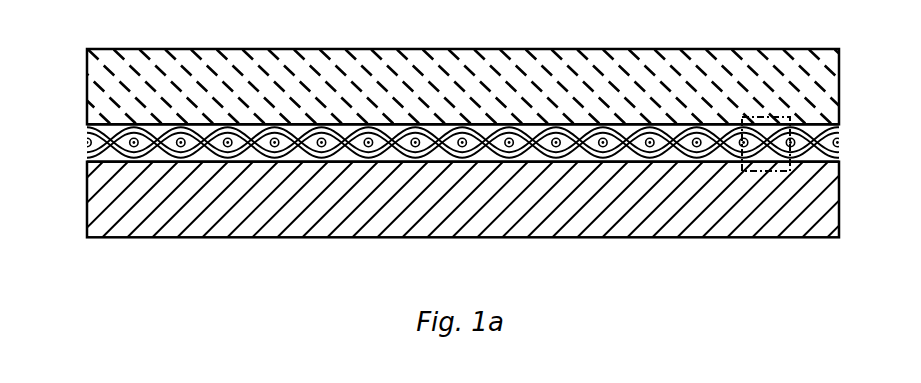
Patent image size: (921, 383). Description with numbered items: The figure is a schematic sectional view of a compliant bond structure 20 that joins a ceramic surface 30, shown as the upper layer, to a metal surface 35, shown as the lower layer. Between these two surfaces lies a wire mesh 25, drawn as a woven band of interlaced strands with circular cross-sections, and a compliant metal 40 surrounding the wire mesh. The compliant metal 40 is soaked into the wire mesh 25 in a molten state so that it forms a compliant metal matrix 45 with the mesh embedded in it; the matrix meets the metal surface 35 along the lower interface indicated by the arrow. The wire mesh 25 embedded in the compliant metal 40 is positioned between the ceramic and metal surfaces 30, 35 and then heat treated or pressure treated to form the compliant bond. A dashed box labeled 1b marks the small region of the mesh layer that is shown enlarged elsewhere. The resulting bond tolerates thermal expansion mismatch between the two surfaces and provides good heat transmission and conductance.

The ceramic surface 30 is at (840, 87).
The compliant bond structure 20 is at (501, 202).
The metal surface 35 is at (840, 197).
The wire mesh 25 is at (276, 152).
The compliant metal 40 is at (345, 158).
The compliant metal matrix 45 is at (682, 165).
The detail region shown in FIG. 1b is at (778, 115).